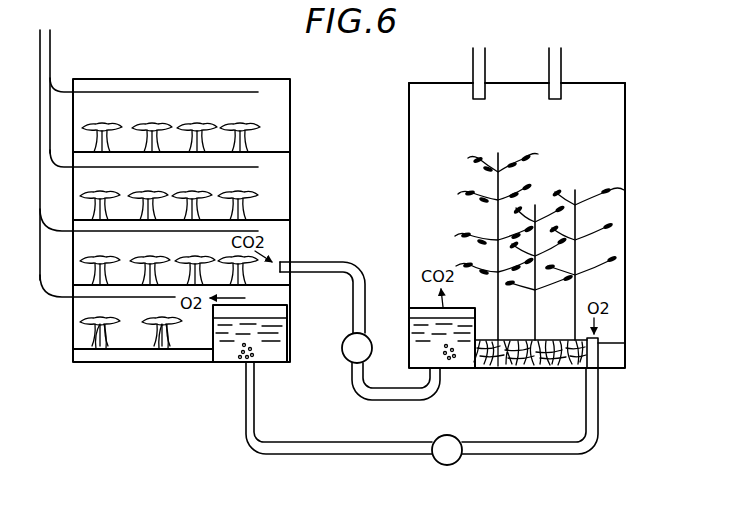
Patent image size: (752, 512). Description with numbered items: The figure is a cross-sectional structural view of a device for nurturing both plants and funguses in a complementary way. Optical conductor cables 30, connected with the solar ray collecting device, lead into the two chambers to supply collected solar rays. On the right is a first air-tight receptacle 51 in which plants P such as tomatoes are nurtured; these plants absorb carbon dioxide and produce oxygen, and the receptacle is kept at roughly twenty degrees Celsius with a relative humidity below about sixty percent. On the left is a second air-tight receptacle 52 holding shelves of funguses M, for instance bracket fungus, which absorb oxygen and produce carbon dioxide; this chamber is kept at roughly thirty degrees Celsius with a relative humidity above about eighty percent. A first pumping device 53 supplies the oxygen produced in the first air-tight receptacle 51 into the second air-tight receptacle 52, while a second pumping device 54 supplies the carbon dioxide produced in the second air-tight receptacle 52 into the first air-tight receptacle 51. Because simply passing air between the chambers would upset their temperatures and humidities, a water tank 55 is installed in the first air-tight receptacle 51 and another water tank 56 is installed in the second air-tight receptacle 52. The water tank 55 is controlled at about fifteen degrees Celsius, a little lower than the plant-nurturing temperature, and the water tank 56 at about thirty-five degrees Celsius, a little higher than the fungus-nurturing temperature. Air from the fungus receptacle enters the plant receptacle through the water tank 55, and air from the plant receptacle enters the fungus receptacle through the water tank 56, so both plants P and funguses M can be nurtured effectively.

The optical conductor cables 30 is at (52, 52).
The first air-tight receptacle 51 is at (618, 117).
The second air-tight receptacle 52 is at (290, 104).
The first pumping device 53 is at (441, 437).
The second pumping device 54 is at (349, 361).
The water tank 55 is at (474, 368).
The water tank 56 is at (288, 348).
The funguses M is at (240, 126).
The plants P is at (546, 165).